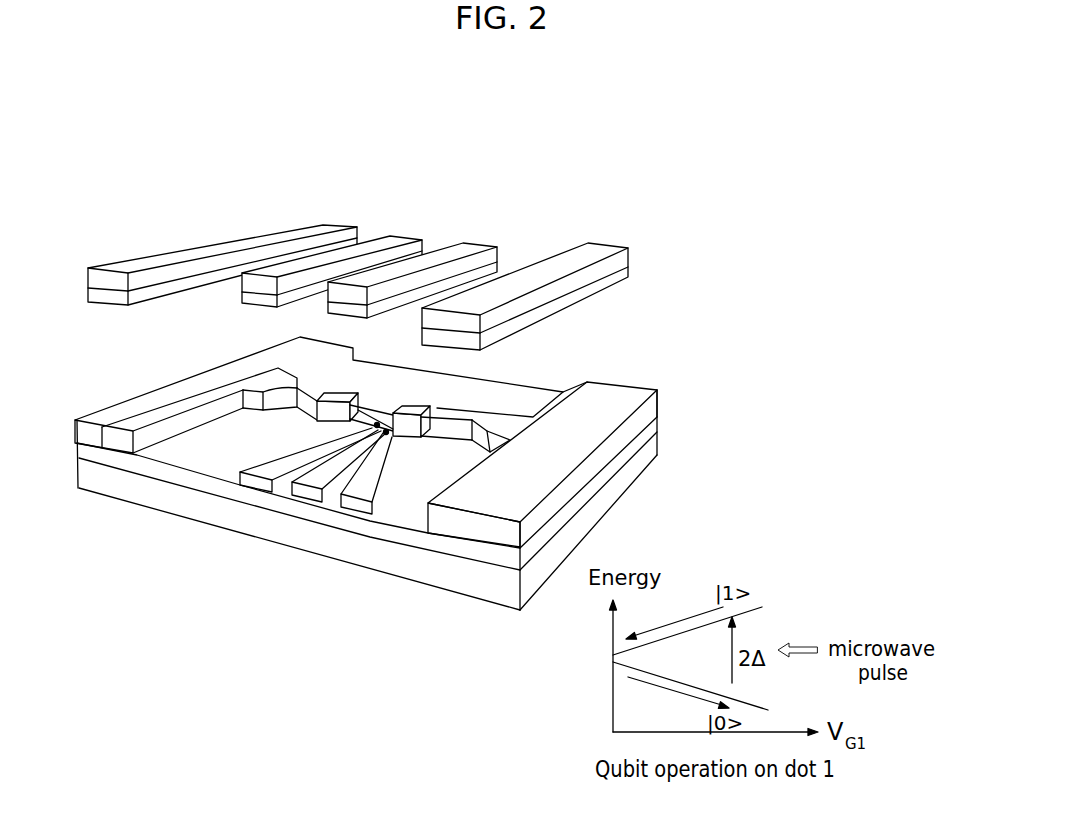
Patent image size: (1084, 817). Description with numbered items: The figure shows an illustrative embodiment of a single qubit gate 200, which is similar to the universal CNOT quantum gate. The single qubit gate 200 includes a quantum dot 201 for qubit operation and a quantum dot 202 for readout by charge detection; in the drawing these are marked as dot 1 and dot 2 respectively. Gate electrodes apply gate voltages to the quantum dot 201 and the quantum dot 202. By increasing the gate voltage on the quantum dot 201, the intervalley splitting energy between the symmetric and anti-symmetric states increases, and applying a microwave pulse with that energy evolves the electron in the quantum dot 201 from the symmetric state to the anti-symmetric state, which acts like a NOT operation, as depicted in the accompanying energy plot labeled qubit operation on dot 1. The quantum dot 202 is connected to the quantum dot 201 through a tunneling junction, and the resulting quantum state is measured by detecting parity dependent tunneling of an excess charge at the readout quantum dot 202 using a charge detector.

The single qubit gate 200 is at (642, 170).
The quantum dot 201 is at (352, 392).
The quantum dot 202 is at (437, 407).
The dot 1 is at (340, 401).
The dot 2 is at (411, 415).